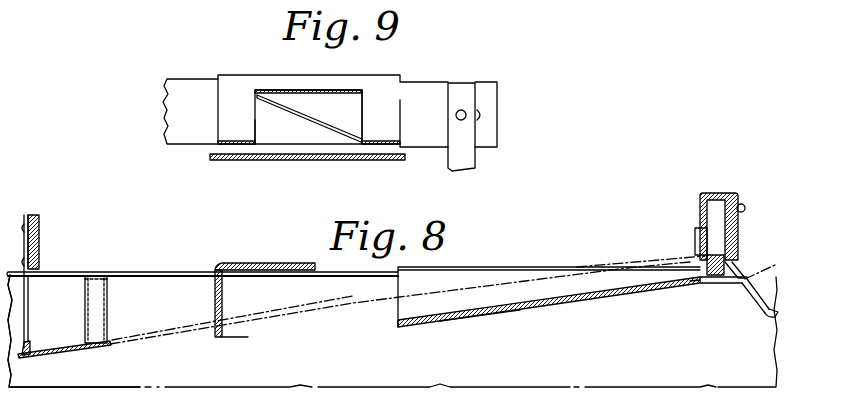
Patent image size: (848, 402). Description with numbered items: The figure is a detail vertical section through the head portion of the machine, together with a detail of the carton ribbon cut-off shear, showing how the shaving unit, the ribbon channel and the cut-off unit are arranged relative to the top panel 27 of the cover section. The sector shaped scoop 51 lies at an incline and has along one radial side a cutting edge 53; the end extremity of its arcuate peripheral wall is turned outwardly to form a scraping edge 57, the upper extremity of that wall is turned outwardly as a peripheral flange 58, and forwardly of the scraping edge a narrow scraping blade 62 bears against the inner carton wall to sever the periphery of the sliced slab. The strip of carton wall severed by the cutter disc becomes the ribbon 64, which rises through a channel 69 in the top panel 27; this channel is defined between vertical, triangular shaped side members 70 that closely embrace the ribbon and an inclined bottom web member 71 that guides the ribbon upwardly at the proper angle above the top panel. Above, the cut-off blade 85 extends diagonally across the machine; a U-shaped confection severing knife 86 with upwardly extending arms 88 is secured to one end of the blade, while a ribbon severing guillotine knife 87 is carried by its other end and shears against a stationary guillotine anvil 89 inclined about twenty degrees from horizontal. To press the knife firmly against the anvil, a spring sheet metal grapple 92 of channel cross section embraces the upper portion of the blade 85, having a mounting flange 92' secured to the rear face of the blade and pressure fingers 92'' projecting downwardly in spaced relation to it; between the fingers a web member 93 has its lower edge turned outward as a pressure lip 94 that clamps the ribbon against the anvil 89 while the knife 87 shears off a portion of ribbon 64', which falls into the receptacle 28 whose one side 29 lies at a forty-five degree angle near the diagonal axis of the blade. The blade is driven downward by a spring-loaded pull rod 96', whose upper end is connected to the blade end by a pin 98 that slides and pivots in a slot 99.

In FIG. 9, the top panel 27 is at (211, 158).
In FIG. 8, the top panel 27 is at (170, 271).
In FIG. 8, the receptacle 28 is at (768, 319).
In FIG. 8, the side of receptacle 29 is at (756, 305).
In FIG. 8, the scoop 51 is at (60, 352).
In FIG. 8, the cutting edge 53 is at (22, 358).
In FIG. 8, the scraping edge 57 is at (215, 298).
In FIG. 8, the peripheral flange 58 is at (258, 263).
In FIG. 8, the scraping blade 62 is at (108, 297).
In FIG. 8, the ribbon 64 is at (641, 250).
In FIG. 8, the portion of ribbon 64' is at (761, 265).
In FIG. 8, the channel 69 is at (474, 312).
In FIG. 8, the side members 70 is at (398, 305).
In FIG. 8, the inclined bottom web member 71 is at (530, 304).
In FIG. 9, the blade 85 is at (166, 116).
In FIG. 8, the blade 85 is at (40, 218).
In FIG. 8, the confection severing knife 86 is at (30, 345).
In FIG. 8, the guillotine knife 87 is at (738, 265).
In FIG. 8, the arms 88 is at (30, 302).
In FIG. 9, the guillotine anvil 89 is at (321, 146).
In FIG. 8, the guillotine anvil 89 is at (715, 283).
In FIG. 9, the grapple 92 is at (333, 101).
In FIG. 8, the grapple 92 is at (722, 214).
In FIG. 9, the mounting flange 92' is at (275, 133).
In FIG. 9, the pressure fingers 92'' is at (417, 122).
In FIG. 8, the pressure fingers 92'' is at (681, 295).
In FIG. 9, the web member 93 is at (363, 115).
In FIG. 8, the web member 93 is at (697, 230).
In FIG. 9, the pressure lip 94 is at (332, 122).
In FIG. 8, the pressure lip 94 is at (707, 258).
In FIG. 9, the pull rod 96' is at (478, 114).
In FIG. 9, the pin 98 is at (455, 115).
In FIG. 9, the slot 99 is at (483, 115).